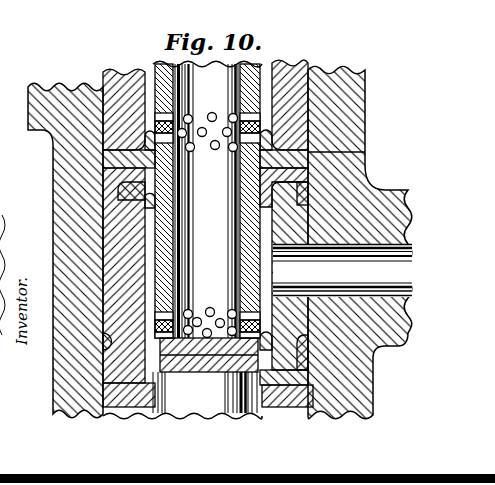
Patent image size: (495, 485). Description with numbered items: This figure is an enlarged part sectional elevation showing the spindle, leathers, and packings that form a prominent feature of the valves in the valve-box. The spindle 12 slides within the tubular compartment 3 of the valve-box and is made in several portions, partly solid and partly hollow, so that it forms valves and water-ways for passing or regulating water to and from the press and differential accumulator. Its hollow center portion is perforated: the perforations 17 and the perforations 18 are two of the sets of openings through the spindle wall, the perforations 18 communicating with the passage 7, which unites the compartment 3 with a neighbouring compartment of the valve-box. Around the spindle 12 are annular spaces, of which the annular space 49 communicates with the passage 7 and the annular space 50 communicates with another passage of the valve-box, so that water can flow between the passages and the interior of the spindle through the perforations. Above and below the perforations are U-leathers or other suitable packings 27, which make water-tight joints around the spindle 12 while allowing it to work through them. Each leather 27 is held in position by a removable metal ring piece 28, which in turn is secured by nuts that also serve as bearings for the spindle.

The compartment 3 is at (33, 118).
The annular space 50 is at (146, 74).
The removable metal ring piece 28 is at (297, 73).
The U-leather packing 27 is at (308, 153).
The annular space 49 is at (148, 213).
The passage 7 is at (388, 279).
The perforations 17 is at (212, 113).
The perforations 18 is at (211, 306).
The spindle 12 is at (182, 395).